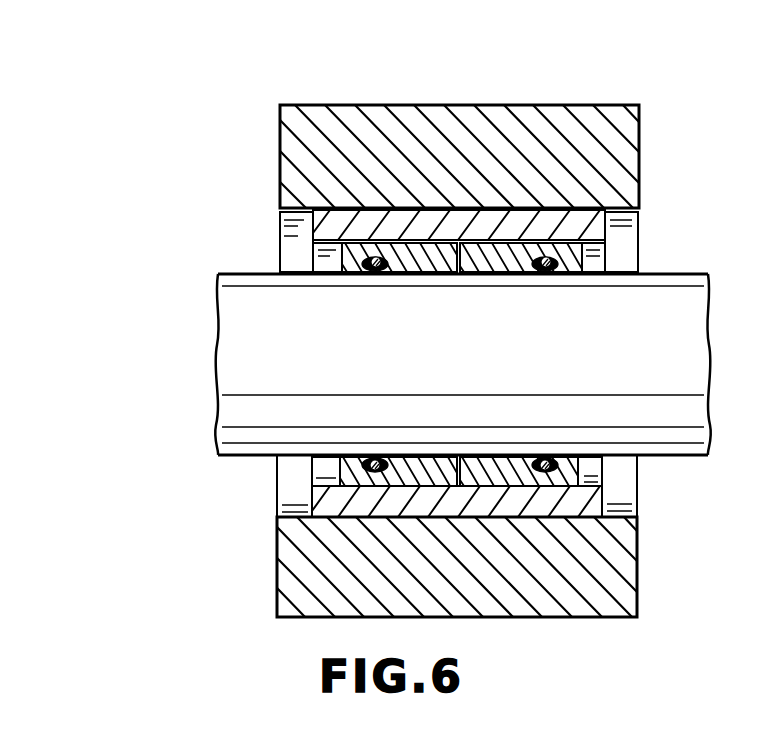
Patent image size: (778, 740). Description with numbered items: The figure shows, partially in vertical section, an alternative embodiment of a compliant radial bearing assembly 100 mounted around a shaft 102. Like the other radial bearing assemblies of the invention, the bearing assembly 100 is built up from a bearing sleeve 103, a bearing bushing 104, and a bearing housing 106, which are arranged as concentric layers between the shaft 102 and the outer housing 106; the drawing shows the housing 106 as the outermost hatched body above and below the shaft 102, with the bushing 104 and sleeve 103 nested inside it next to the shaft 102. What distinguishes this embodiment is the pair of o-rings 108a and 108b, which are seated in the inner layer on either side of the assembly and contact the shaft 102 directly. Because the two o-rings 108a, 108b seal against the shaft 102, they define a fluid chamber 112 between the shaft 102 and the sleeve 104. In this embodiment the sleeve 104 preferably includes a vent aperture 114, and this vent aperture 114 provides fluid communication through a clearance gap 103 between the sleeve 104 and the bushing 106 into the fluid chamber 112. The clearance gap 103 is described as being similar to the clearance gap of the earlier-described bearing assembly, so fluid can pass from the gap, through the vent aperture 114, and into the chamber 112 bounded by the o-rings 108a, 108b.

The compliant radial bearing assembly 100 is at (250, 242).
The shaft 102 is at (672, 456).
The bearing sleeve 103 is at (606, 268).
The bearing bushing 104 is at (620, 236).
The bearing housing 106 is at (643, 166).
The o-ring 108a is at (377, 250).
The o-ring 108b is at (548, 250).
The fluid chamber 112 is at (347, 520).
The vent aperture 114 is at (460, 240).